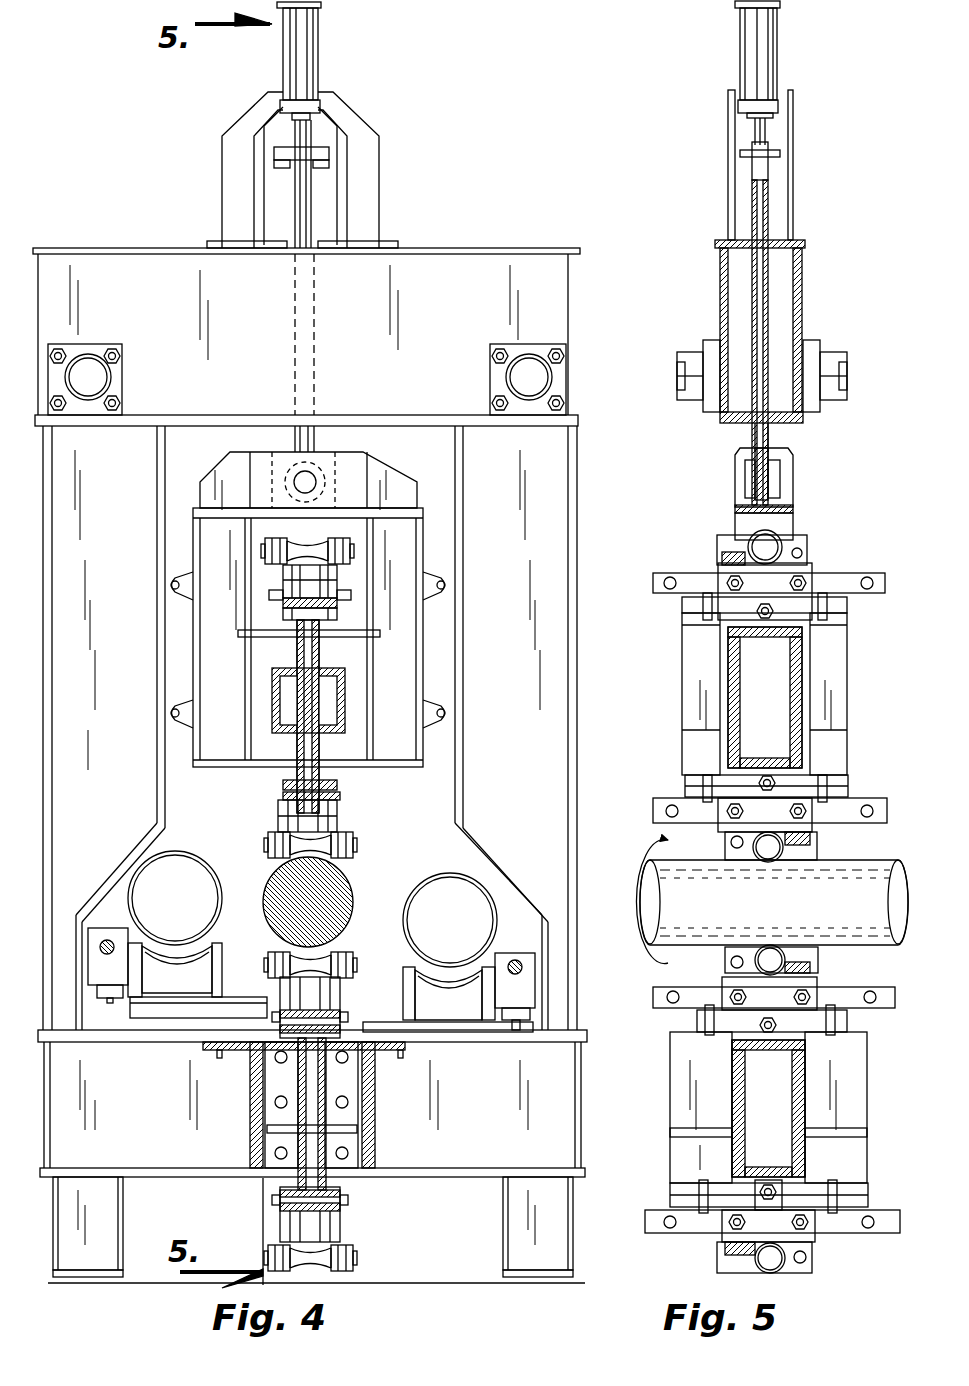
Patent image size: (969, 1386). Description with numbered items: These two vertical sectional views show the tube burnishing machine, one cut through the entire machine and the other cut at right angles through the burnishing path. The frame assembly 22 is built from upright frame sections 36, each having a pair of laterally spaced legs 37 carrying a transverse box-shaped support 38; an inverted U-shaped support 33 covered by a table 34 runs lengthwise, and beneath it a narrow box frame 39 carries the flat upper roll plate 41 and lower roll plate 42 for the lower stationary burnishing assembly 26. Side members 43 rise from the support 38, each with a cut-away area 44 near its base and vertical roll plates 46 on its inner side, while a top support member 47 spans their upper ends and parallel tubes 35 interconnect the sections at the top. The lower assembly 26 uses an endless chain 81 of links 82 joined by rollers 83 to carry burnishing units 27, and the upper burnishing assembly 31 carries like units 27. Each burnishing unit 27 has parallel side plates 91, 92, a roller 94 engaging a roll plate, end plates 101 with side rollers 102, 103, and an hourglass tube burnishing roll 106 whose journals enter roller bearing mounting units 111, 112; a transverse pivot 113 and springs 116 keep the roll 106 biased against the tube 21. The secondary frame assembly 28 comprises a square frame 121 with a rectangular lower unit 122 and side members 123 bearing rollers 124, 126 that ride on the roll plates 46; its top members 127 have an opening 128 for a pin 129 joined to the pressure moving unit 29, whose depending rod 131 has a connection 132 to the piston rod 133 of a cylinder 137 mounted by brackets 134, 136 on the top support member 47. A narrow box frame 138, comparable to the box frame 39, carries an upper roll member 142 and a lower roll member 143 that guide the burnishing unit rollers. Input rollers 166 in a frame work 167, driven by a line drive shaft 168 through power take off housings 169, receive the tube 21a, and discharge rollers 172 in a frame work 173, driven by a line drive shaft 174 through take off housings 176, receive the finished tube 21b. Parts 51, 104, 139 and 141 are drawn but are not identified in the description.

In FIG. 4, the tube 21 is at (341, 895).
In FIG. 5, the tube 21 is at (652, 868).
In FIG. 4, the tube in input position 21a is at (200, 858).
In FIG. 4, the tube in discharge position 21b is at (415, 875).
In FIG. 4, the frame assembly 22 is at (497, 233).
In FIG. 5, the frame assembly 22 is at (715, 238).
In FIG. 4, the lower stationary burnishing assembly 26 is at (272, 1183).
In FIG. 4, the burnishing unit 27 is at (383, 450).
In FIG. 5, the burnishing unit 27 is at (698, 540).
In FIG. 4, the secondary frame assembly 28 is at (455, 515).
In FIG. 5, the secondary frame assembly 28 is at (725, 515).
In FIG. 4, the pressure moving unit 29 is at (361, 61).
In FIG. 5, the pressure moving unit 29 is at (753, 59).
In FIG. 4, the upper burnishing assembly 31 is at (267, 775).
In FIG. 4, the inverted U-shaped support 33 is at (262, 1117).
In FIG. 4, the table 34 is at (210, 1043).
In FIG. 4, the parallel tubes 35 is at (103, 383).
In FIG. 5, the parallel tubes 35 is at (682, 353).
In FIG. 4, the upright frame section 36 is at (580, 592).
In FIG. 4, the legs 37 is at (107, 1222).
In FIG. 4, the transverse box-shaped support 38 is at (560, 1093).
In FIG. 5, the transverse box-shaped support 38 is at (733, 1080).
In FIG. 4, the narrow box frame 39 is at (298, 1085).
In FIG. 5, the narrow box frame 39 is at (682, 1115).
In FIG. 4, the upper roll plate 41 is at (342, 1012).
In FIG. 5, the upper roll plate 41 is at (853, 1013).
In FIG. 4, the lower roll plate 42 is at (342, 1205).
In FIG. 5, the lower roll plate 42 is at (853, 1202).
In FIG. 4, the side members 43 is at (603, 480).
In FIG. 4, the cut-away area 44 is at (120, 890).
In FIG. 4, the roll plates 46 is at (155, 757).
In FIG. 4, the top support member 47 is at (553, 325).
In FIG. 5, the top support member 47 is at (723, 325).
In FIG. 4, the pipe section 51 is at (340, 910).
In FIG. 5, the endless chain 81 is at (636, 1220).
In FIG. 5, the links 82 is at (842, 578).
In FIG. 5, the rollers 83 is at (870, 578).
In FIG. 4, the side plate 91 is at (280, 808).
In FIG. 4, the side plate 92 is at (347, 798).
In FIG. 5, the side plate 92 is at (797, 1180).
In FIG. 4, the roller 94 is at (290, 583).
In FIG. 5, the end plates 101 is at (697, 1200).
In FIG. 4, the side roller 102 is at (283, 607).
In FIG. 5, the side roller 102 is at (708, 618).
In FIG. 4, the side roller 103 is at (345, 602).
In FIG. 5, the bolt 104 is at (827, 618).
In FIG. 4, the tube burnishing roll 106 is at (312, 538).
In FIG. 4, the roller bearing mounting unit 111 is at (268, 840).
In FIG. 4, the roller bearing mounting unit 112 is at (345, 845).
In FIG. 5, the roller bearing mounting unit 112 is at (775, 1267).
In FIG. 5, the transverse pivot 113 is at (808, 1257).
In FIG. 5, the springs 116 is at (718, 1252).
In FIG. 4, the square frame 121 is at (400, 505).
In FIG. 5, the rectangular lower unit 122 is at (728, 657).
In FIG. 4, the side members 123 is at (200, 678).
In FIG. 4, the roller 124 is at (165, 583).
In FIG. 4, the roller 126 is at (423, 585).
In FIG. 5, the top members 127 is at (748, 455).
In FIG. 4, the opening 128 is at (305, 471).
In FIG. 5, the pin 129 is at (745, 480).
In FIG. 4, the depending rod 131 is at (314, 373).
In FIG. 5, the depending rod 131 is at (775, 388).
In FIG. 4, the connection 132 is at (329, 151).
In FIG. 5, the connection 132 is at (772, 152).
In FIG. 4, the piston rod 133 is at (310, 126).
In FIG. 5, the piston rod 133 is at (765, 128).
In FIG. 4, the bracket 134 is at (233, 157).
In FIG. 4, the bracket 136 is at (373, 178).
In FIG. 5, the bracket 136 is at (732, 163).
In FIG. 4, the cylinder 137 is at (314, 67).
In FIG. 5, the cylinder 137 is at (770, 58).
In FIG. 4, the narrow box frame 138 is at (317, 660).
In FIG. 5, the narrow box frame 138 is at (698, 632).
In FIG. 4, the bearing block 139 is at (275, 715).
In FIG. 4, the bearing block 141 is at (348, 702).
In FIG. 5, the bearing block 141 is at (698, 692).
In FIG. 4, the upper roll member 142 is at (340, 595).
In FIG. 5, the upper roll member 142 is at (688, 600).
In FIG. 4, the lower roll member 143 is at (340, 786).
In FIG. 5, the lower roll member 143 is at (685, 792).
In FIG. 4, the input rollers 166 is at (165, 963).
In FIG. 4, the frame work 167 is at (190, 1015).
In FIG. 4, the line drive shaft 168 is at (100, 947).
In FIG. 4, the power take off housing 169 is at (100, 970).
In FIG. 4, the discharge rollers 172 is at (467, 1005).
In FIG. 4, the frame work 173 is at (493, 1032).
In FIG. 4, the line drive shaft 174 is at (522, 965).
In FIG. 4, the take off housing 176 is at (530, 987).